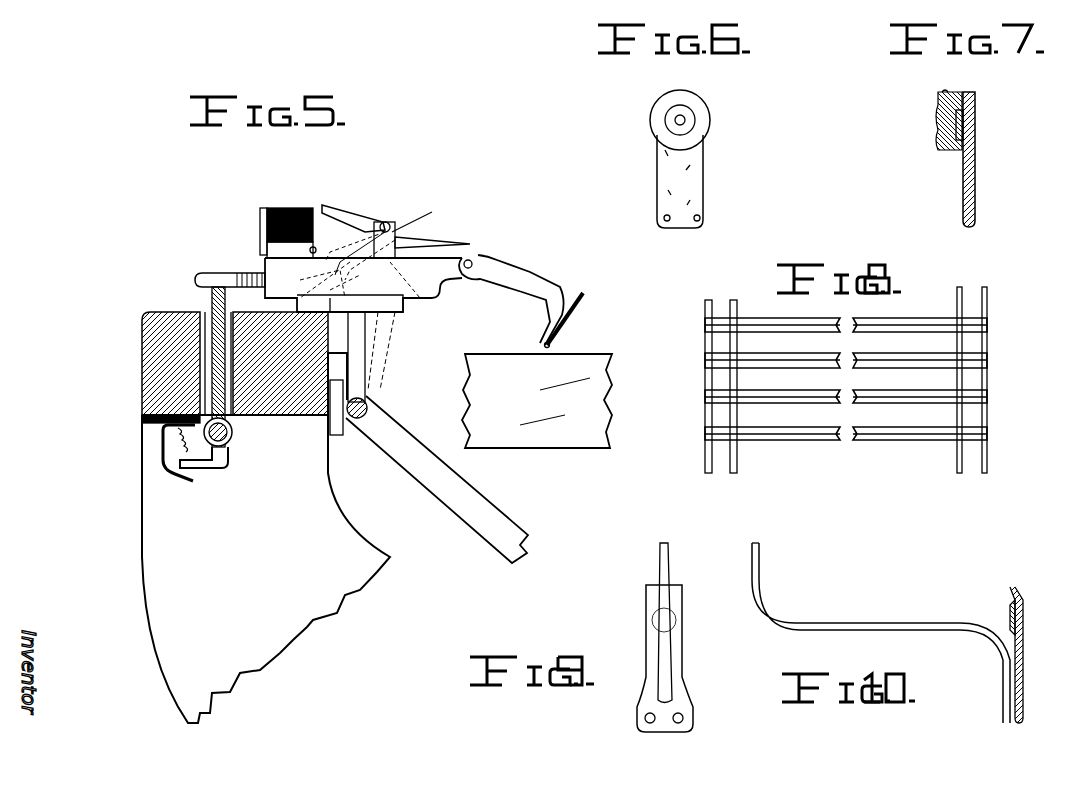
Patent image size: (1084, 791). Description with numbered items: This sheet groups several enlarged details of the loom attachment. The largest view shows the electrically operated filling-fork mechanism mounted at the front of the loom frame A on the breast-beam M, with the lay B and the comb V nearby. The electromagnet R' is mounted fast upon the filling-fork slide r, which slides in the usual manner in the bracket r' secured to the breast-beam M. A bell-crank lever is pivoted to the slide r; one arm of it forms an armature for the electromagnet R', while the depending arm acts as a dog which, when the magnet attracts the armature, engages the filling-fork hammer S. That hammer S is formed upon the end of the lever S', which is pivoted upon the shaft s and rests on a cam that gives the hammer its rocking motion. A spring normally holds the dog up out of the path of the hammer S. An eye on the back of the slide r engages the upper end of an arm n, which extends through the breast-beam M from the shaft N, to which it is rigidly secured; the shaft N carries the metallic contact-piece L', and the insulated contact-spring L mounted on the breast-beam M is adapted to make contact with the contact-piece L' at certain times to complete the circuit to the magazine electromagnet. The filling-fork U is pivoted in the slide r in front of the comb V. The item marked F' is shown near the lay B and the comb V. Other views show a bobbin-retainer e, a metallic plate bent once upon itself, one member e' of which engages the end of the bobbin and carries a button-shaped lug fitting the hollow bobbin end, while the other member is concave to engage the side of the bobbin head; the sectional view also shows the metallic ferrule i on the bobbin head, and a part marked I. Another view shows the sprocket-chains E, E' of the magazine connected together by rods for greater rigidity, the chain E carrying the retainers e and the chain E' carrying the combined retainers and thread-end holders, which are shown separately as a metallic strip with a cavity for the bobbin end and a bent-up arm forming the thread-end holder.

In FIG. 5, the frame A is at (266, 538).
In FIG. 5, the breast-beam M is at (146, 372).
In FIG. 5, the plate l is at (145, 420).
In FIG. 5, the arm n is at (212, 318).
In FIG. 5, the shaft N is at (233, 433).
In FIG. 5, the contact-spring L is at (147, 463).
In FIG. 5, the contact-piece L' is at (204, 479).
In FIG. 5, the filling-fork slide r is at (363, 286).
In FIG. 5, the electromagnet R' is at (286, 215).
In FIG. 5, the bar u is at (432, 232).
In FIG. 5, the filling-fork U is at (494, 272).
In FIG. 5, the bracket r' is at (385, 351).
In FIG. 5, the filling-fork hammer S is at (366, 373).
In FIG. 5, the shaft s is at (368, 406).
In FIG. 5, the lever S' is at (437, 479).
In FIG. 5, the lay B is at (537, 401).
In FIG. 5, the comb V is at (584, 300).
In FIG. 5, the pivot F' is at (576, 334).
In FIG. 6, the bobbin-retainer e is at (690, 181).
In FIG. 7, the bobbin-retainer e is at (951, 170).
In FIG. 6, the member e' is at (701, 120).
In FIG. 7, the member e' is at (989, 159).
In FIG. 7, the knurled nut I is at (938, 127).
In FIG. 7, the metallic ferrule i is at (942, 90).
In FIG. 8, the sprocket-chain E is at (698, 386).
In FIG. 8, the sprocket-chain E' is at (985, 380).